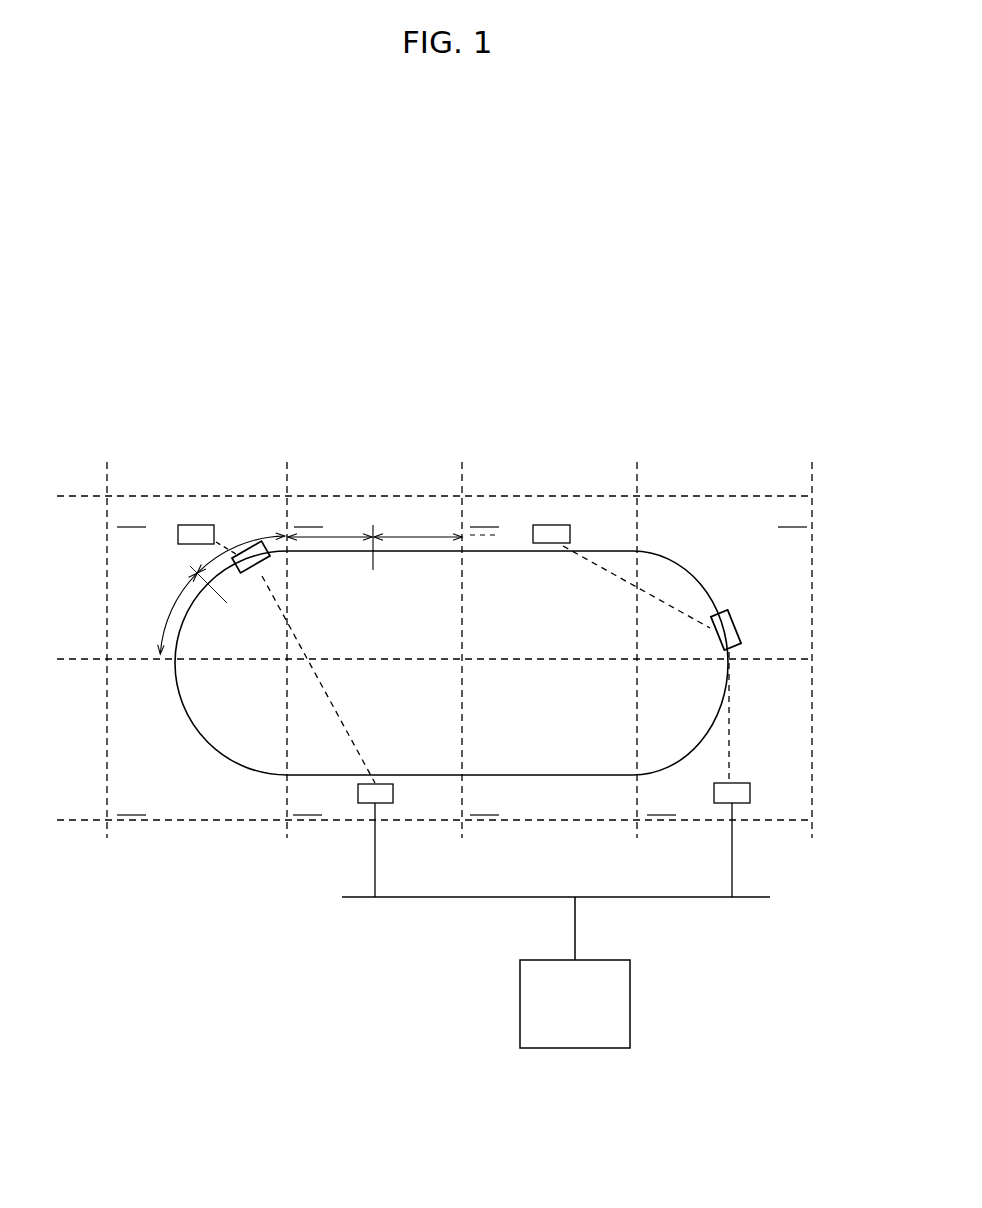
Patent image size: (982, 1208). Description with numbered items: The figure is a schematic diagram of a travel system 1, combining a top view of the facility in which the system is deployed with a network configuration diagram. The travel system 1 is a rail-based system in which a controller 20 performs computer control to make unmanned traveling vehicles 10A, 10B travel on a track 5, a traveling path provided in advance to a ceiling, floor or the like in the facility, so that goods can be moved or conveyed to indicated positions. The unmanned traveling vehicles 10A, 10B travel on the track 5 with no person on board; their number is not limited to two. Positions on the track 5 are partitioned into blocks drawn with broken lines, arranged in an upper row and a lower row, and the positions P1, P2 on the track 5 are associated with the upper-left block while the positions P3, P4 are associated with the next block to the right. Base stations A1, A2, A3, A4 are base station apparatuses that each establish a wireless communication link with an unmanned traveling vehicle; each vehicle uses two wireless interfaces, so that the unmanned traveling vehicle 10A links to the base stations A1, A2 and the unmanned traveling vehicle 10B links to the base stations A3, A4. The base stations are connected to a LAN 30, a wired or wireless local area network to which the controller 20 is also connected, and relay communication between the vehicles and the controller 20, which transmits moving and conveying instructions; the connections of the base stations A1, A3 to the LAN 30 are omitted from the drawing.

The travel system 1 is at (727, 398).
The track 5 is at (707, 595).
The unmanned traveling vehicle 10A is at (247, 573).
The unmanned traveling vehicle 10B is at (740, 628).
The controller 20 is at (610, 959).
The LAN 30 is at (753, 897).
The base station A1 is at (199, 525).
The base station A2 is at (393, 791).
The base station A3 is at (560, 525).
The base station A4 is at (750, 793).
The position P1 is at (171, 608).
The position P2 is at (277, 537).
The position P3 is at (325, 536).
The position P4 is at (395, 536).